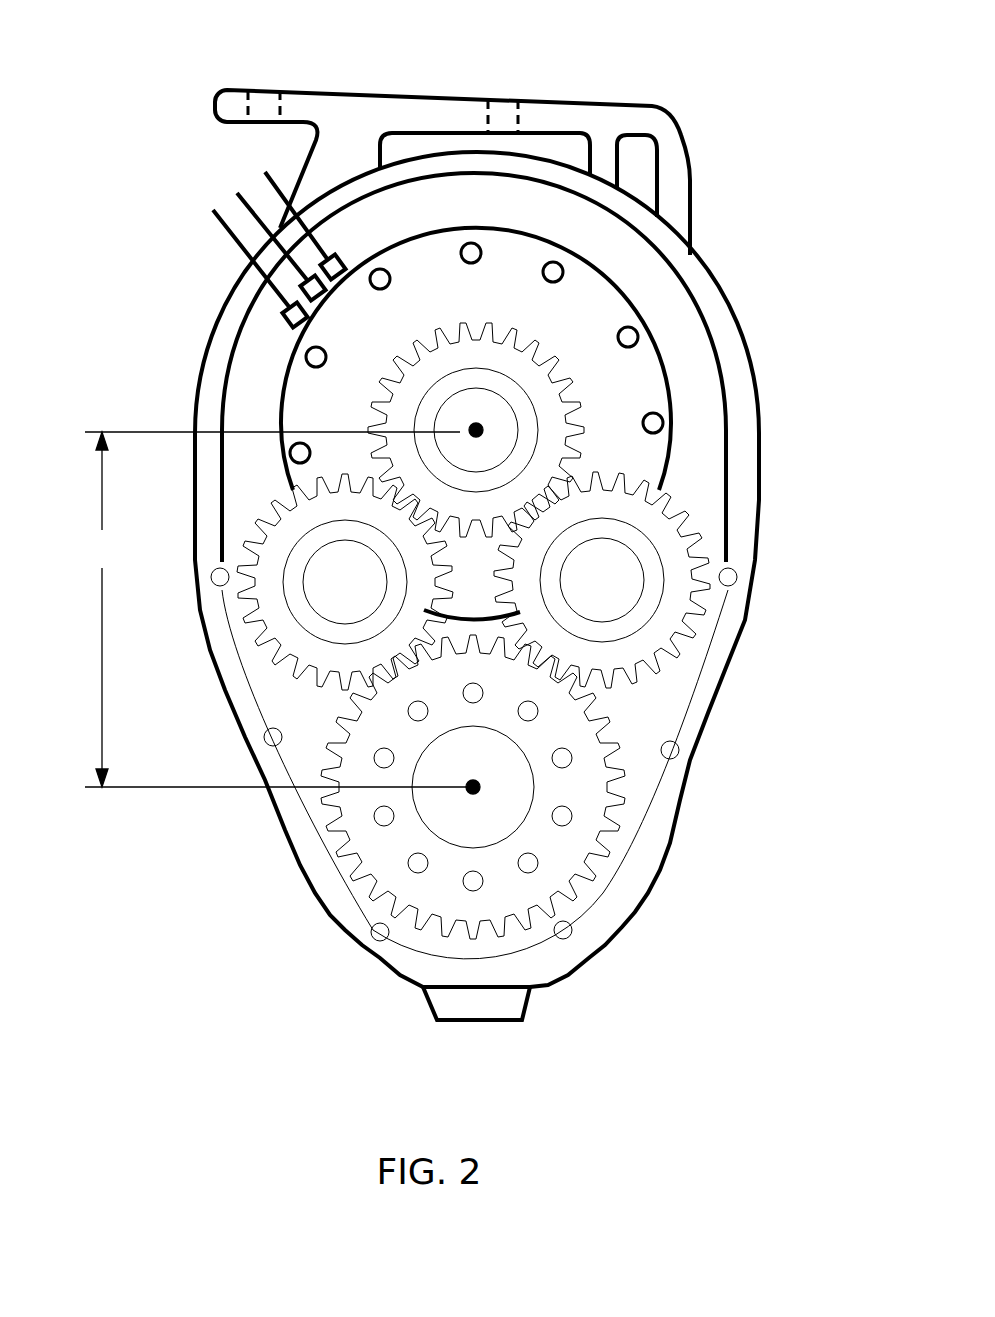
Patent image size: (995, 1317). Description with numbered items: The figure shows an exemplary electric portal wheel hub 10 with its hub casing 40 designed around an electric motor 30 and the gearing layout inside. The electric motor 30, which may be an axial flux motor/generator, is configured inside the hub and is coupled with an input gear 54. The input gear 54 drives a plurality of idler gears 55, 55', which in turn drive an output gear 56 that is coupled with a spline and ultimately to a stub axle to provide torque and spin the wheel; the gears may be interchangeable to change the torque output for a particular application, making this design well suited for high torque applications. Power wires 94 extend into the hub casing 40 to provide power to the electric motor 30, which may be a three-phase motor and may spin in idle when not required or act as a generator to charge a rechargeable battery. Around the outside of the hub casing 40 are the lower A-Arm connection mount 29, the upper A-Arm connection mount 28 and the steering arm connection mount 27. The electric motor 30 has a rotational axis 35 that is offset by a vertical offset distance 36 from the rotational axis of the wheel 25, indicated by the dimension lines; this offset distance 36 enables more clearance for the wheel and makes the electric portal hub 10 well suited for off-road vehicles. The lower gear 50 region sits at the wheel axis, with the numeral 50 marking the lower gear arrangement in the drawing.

The electric portal wheel hub 10 is at (150, 280).
The rotational axis of the wheel 25 is at (470, 792).
The steering arm connection mount 27 is at (280, 91).
The upper A-Arm connection mount 28 is at (505, 100).
The lower A-Arm connection mount 29 is at (484, 1018).
The electric motor 30 is at (327, 398).
The rotational axis 35 is at (480, 430).
The vertical offset distance 36 is at (275, 609).
The hub casing 40 is at (680, 323).
The output gear 50 is at (510, 800).
The input gear 54 is at (553, 427).
The idler gear 55 is at (292, 582).
The idler gear 55' is at (661, 580).
The output gear 56 is at (587, 797).
The power wires 94 is at (223, 218).